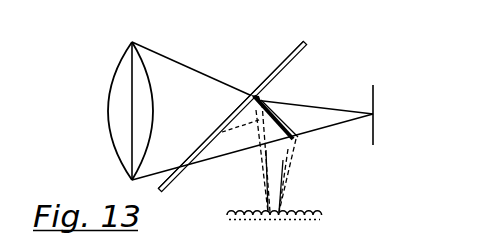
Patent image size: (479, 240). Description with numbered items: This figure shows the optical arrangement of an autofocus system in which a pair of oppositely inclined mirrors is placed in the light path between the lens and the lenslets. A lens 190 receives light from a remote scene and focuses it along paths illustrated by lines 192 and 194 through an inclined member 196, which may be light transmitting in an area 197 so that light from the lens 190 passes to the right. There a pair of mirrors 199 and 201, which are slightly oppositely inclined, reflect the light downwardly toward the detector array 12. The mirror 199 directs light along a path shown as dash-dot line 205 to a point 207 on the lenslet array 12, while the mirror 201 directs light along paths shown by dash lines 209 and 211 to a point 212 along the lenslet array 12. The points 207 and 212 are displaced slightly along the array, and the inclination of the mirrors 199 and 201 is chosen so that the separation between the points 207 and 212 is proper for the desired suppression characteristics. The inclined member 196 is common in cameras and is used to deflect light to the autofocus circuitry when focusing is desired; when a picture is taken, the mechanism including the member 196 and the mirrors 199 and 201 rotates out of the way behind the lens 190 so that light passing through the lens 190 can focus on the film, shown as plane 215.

The lens 190 is at (113, 78).
The light path line 192 is at (195, 64).
The light path line 194 is at (205, 163).
The inclined member 196 is at (272, 73).
The light transmitting area 197 is at (226, 121).
The mirror 199 is at (292, 126).
The mirror 201 is at (297, 104).
The dash-dot line light path 205 is at (292, 157).
The point on lenslet array 207 is at (265, 210).
The dash line light path 209 is at (224, 126).
The dash line light path 211 is at (287, 171).
The point on lenslet array 212 is at (281, 210).
The film plane 215 is at (375, 97).
The detector array 12 is at (322, 214).